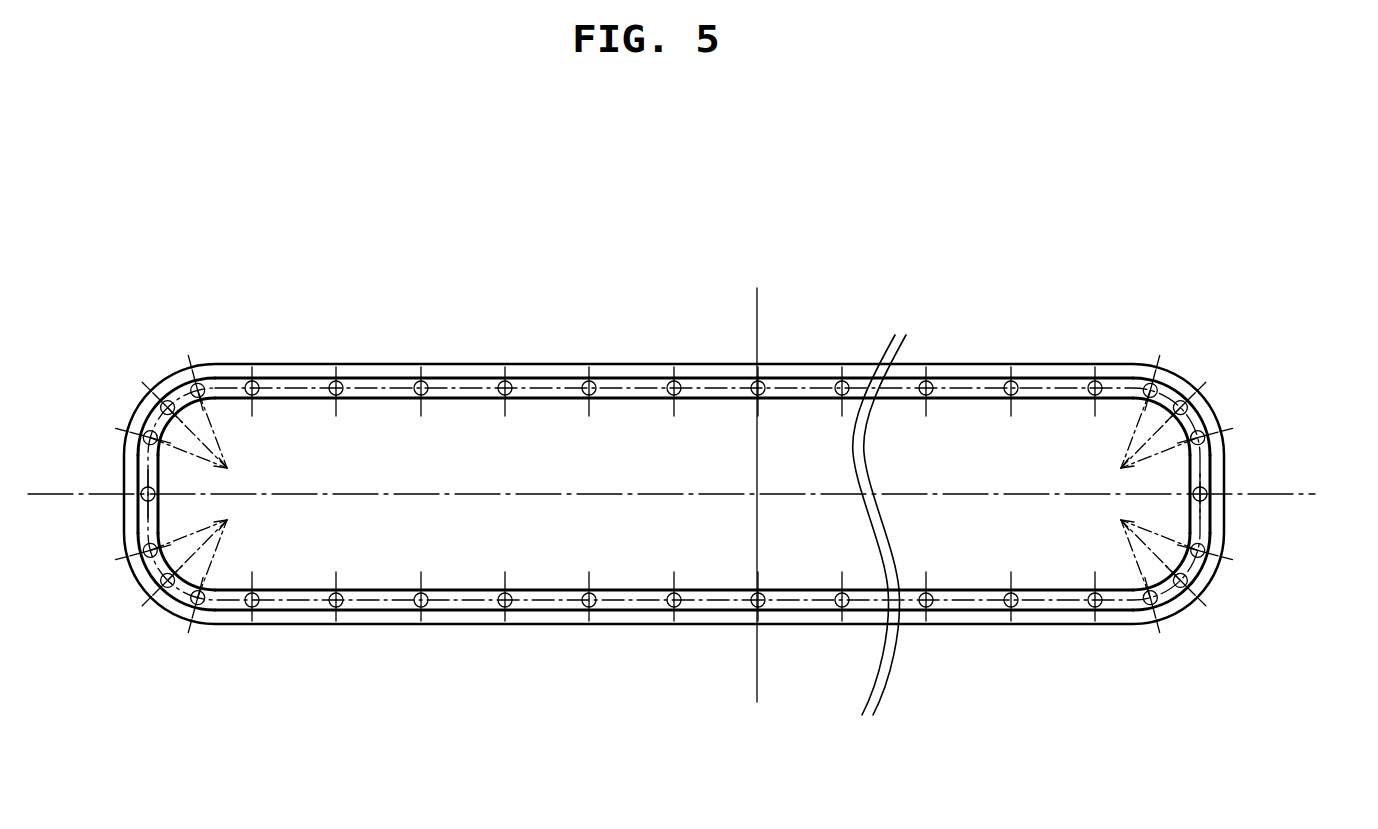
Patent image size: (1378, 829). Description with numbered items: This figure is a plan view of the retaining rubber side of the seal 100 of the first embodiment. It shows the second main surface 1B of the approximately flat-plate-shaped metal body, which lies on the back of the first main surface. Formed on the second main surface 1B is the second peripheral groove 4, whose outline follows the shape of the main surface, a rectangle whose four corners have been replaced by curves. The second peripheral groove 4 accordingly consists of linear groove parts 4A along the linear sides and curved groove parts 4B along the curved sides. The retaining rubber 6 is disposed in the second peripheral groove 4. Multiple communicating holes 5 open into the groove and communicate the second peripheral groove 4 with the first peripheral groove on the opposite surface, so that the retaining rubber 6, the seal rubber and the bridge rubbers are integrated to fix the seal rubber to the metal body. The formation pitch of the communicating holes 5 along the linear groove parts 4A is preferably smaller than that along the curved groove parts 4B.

The seal 100 is at (1203, 338).
The second main surface 1B is at (537, 438).
The second peripheral groove 4 is at (738, 461).
The linear groove part 4A is at (360, 388).
The curved groove part 4B is at (328, 236).
The communicating hole 5 is at (424, 385).
The retaining rubber 6 is at (715, 388).